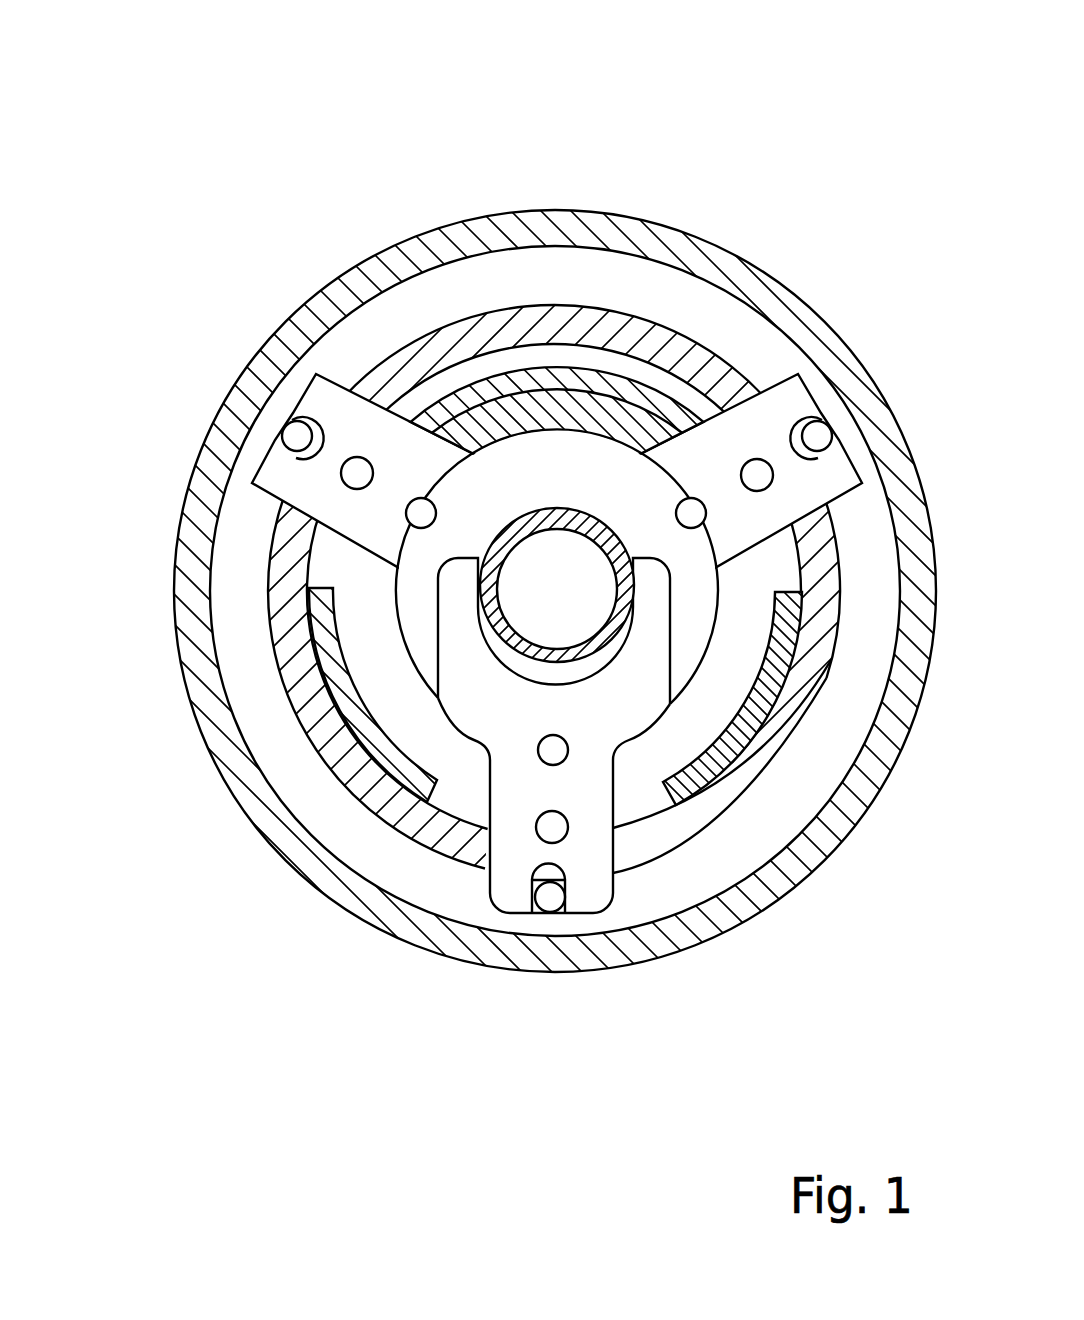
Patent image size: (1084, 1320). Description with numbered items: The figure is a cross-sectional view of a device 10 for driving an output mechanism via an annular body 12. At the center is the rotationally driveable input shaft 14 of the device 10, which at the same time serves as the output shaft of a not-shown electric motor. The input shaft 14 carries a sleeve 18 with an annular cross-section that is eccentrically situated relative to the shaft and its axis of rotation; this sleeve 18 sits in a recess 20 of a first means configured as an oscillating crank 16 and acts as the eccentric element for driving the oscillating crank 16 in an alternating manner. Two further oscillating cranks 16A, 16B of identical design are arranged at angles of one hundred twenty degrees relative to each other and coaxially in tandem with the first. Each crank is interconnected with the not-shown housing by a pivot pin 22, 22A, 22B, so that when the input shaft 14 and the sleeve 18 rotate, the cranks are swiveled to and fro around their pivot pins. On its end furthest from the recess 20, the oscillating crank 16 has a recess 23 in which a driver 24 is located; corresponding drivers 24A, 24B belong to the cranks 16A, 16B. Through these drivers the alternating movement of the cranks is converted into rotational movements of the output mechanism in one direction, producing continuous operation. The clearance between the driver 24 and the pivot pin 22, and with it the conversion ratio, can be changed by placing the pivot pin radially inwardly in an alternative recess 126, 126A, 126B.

The device 10 is at (542, 567).
The annular body 12 is at (222, 430).
The input shaft 14 is at (530, 594).
The oscillating crank 16 is at (517, 842).
The oscillating crank 16A is at (315, 408).
The oscillating crank 16B is at (720, 453).
The sleeve 18 is at (500, 530).
The recess 20 is at (540, 670).
The pivot pin 22 is at (553, 826).
The pivot pin 22A is at (357, 473).
The pivot pin 22B is at (761, 482).
The recess 23 is at (548, 895).
The driver 24 is at (552, 900).
The driver 24A is at (293, 429).
The driver 24B is at (821, 431).
The alternative recess 126 is at (553, 752).
The alternative recess 126A is at (425, 509).
The alternative recess 126B is at (689, 508).